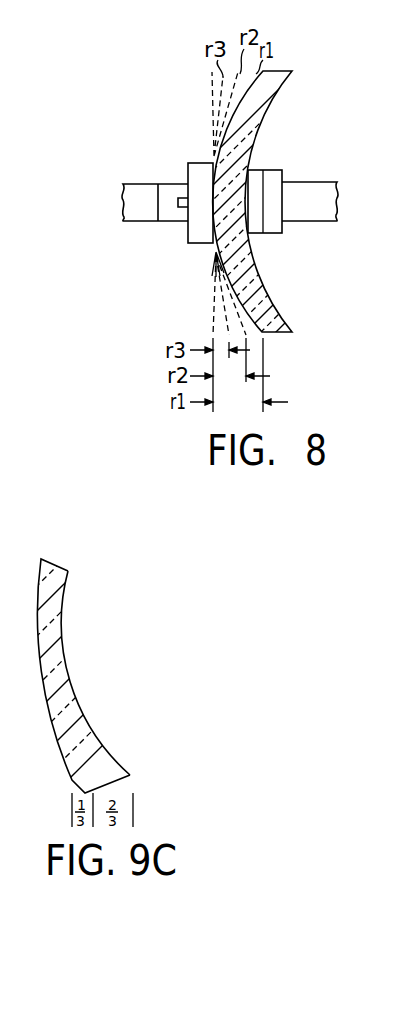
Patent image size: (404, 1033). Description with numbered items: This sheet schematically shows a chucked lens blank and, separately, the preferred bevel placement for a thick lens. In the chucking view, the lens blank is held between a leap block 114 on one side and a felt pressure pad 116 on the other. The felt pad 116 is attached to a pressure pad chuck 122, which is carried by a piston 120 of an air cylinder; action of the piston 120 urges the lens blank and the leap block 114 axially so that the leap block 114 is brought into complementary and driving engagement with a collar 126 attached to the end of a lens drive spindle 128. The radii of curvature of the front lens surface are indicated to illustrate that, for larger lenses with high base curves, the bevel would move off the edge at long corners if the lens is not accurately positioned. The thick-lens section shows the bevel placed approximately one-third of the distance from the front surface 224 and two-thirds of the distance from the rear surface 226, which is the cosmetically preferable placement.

In FIG. 8, the leap block 114 is at (199, 163).
In FIG. 8, the felt pressure pad 116 is at (254, 172).
In FIG. 8, the piston 120 is at (316, 221).
In FIG. 8, the pressure pad chuck 122 is at (268, 170).
In FIG. 8, the collar 126 is at (168, 221).
In FIG. 8, the lens drive spindle 128 is at (137, 221).
In FIG. 9C, the front surface 224 is at (55, 733).
In FIG. 9C, the rear surface 226 is at (100, 733).